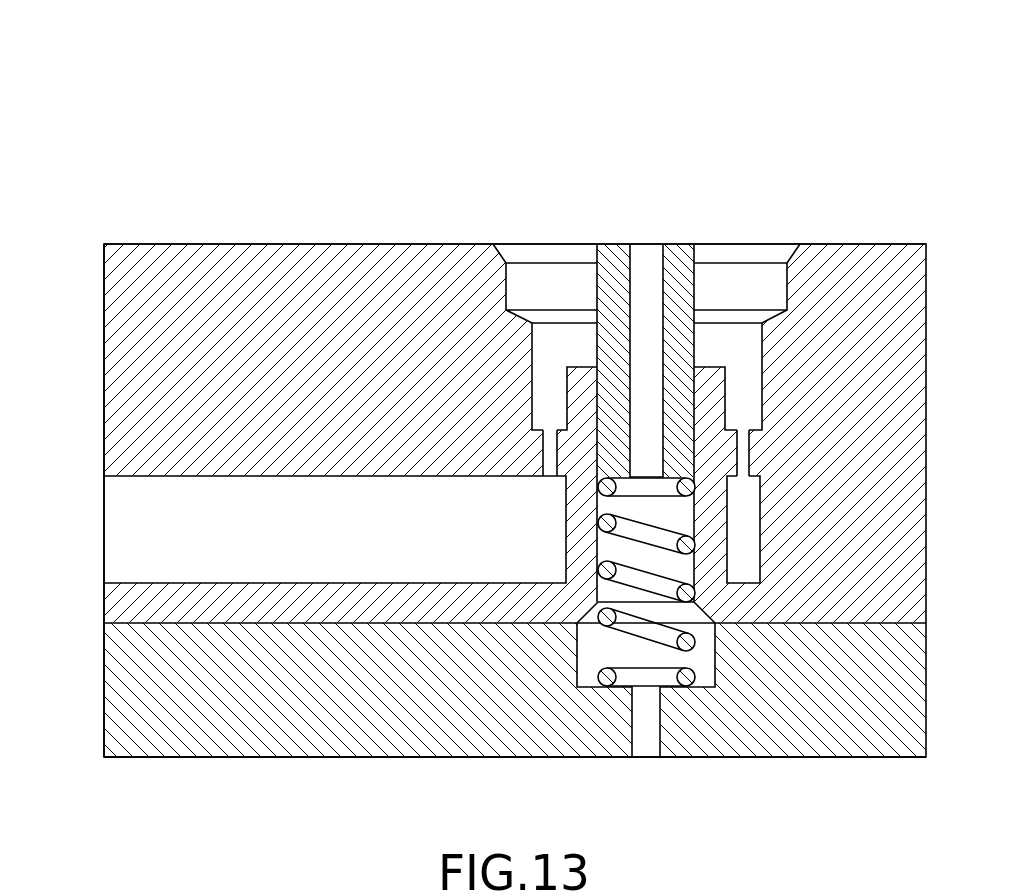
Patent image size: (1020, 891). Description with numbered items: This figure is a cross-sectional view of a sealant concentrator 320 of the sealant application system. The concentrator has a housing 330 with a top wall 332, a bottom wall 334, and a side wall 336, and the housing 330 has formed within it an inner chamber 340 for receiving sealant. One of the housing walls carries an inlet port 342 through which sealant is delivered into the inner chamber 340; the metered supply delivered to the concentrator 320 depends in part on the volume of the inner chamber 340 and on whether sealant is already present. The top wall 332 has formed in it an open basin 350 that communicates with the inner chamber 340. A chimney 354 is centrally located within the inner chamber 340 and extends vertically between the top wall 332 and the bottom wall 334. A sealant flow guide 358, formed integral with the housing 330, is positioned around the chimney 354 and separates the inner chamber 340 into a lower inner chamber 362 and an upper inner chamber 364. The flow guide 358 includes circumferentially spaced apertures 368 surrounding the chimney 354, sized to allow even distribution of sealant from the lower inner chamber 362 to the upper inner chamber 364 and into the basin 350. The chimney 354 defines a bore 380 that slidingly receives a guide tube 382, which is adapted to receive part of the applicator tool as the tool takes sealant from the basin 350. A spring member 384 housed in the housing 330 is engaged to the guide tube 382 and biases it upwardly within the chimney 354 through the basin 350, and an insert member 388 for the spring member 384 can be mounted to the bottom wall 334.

The sealant concentrator 320 is at (370, 106).
The housing 330 is at (188, 262).
The top wall 332 is at (278, 246).
The bottom wall 334 is at (145, 626).
The side wall 336 is at (103, 370).
The inner chamber 340 is at (748, 402).
The inlet port 342 is at (139, 527).
The open basin 350 is at (743, 280).
The chimney 354 is at (762, 357).
The sealant flow guide 358 is at (547, 428).
The lower inner chamber 362 is at (747, 540).
The upper inner chamber 364 is at (550, 375).
The apertures 368 is at (750, 453).
The bore 380 is at (595, 385).
The guide tube 382 is at (677, 262).
The spring member 384 is at (650, 633).
The insert member 388 is at (871, 746).